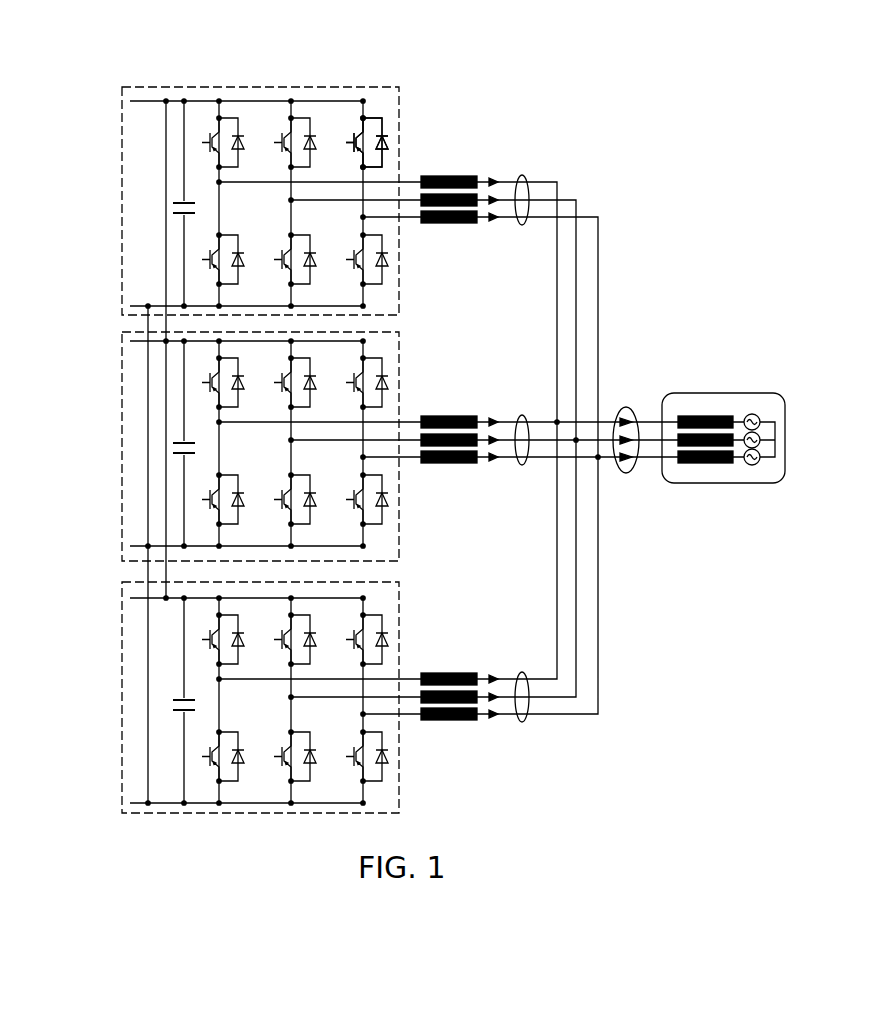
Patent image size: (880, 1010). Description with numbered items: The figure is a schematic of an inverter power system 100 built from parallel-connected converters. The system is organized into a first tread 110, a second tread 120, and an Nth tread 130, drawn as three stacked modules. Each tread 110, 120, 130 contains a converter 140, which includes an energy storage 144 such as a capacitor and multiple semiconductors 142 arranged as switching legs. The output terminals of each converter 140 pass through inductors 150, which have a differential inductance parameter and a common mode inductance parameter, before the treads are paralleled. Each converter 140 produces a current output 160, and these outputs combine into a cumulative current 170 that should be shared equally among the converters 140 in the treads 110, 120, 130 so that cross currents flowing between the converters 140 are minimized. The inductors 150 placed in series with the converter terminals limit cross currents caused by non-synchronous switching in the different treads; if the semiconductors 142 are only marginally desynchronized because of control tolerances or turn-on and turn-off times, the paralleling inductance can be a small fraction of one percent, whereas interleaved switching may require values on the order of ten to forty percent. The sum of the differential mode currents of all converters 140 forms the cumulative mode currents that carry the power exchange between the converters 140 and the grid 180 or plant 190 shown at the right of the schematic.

The inverter power system 100 is at (146, 58).
The first tread 110 is at (112, 85).
The second tread 120 is at (112, 330).
The Nth tread 130 is at (112, 580).
The converter 140 is at (399, 289).
The semiconductors 142 is at (390, 131).
The energy storage 144 is at (176, 203).
The inductors 150 is at (448, 173).
The current output 160 is at (521, 172).
The cumulative current 170 is at (625, 405).
The grid 180 is at (683, 392).
The plant 190 is at (720, 414).